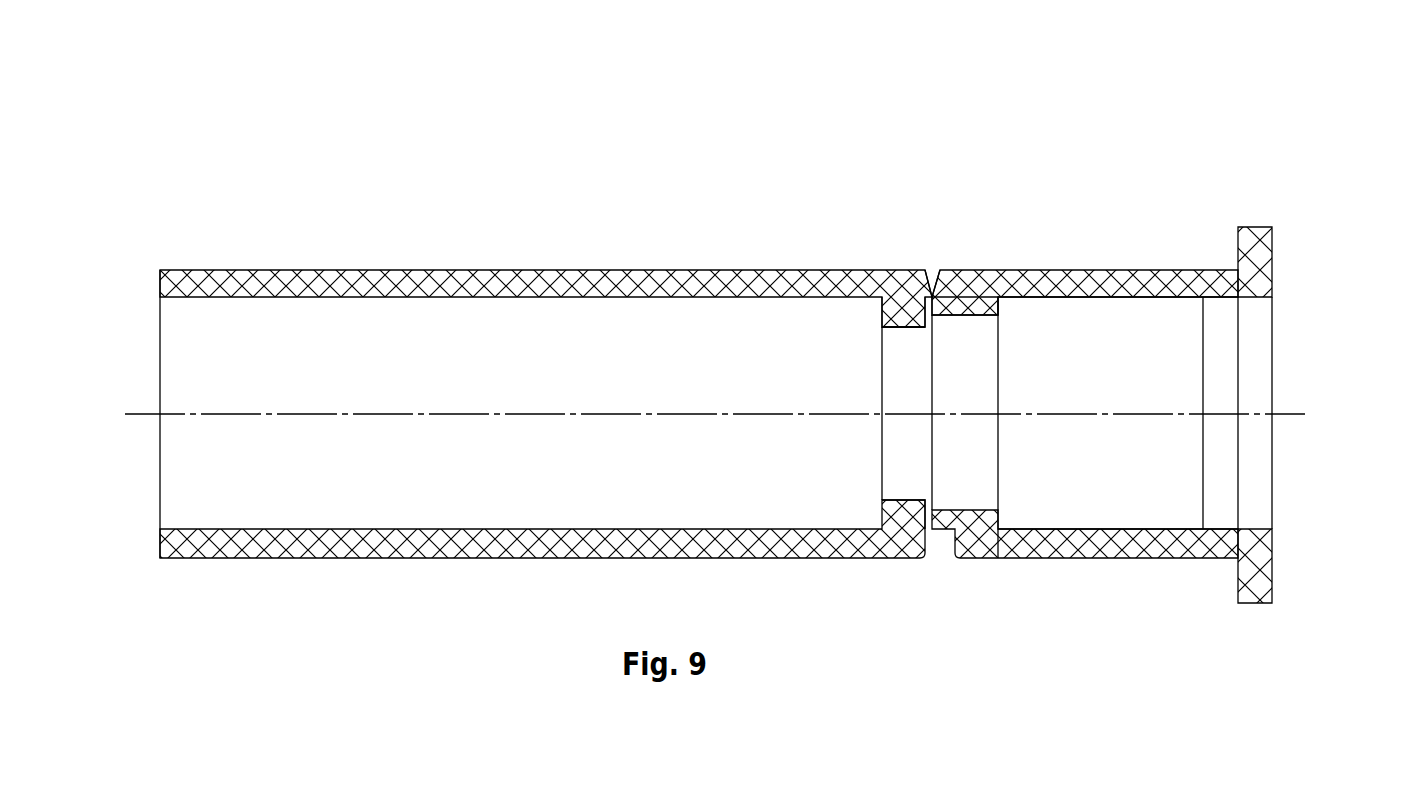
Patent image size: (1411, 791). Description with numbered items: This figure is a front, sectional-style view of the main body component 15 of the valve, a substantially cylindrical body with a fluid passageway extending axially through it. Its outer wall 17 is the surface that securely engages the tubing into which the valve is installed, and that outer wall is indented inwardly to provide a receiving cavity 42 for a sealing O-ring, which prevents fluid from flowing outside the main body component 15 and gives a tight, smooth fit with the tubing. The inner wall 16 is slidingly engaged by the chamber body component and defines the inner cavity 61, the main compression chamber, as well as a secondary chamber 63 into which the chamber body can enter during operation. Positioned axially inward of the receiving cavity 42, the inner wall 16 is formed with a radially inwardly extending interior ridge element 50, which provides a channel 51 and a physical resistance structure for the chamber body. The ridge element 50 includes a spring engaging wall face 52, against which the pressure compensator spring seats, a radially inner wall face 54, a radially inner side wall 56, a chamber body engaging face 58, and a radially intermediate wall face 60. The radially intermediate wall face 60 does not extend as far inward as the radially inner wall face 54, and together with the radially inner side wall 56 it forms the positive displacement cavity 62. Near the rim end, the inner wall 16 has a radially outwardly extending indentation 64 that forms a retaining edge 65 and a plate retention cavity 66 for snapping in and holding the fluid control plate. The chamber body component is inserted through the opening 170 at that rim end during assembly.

The main body component 15 is at (500, 115).
The inner wall 16 is at (600, 528).
The outer wall 17 is at (395, 270).
The receiving cavity 42 is at (934, 296).
The interior ridge element 50 is at (900, 362).
The channel 51 is at (903, 457).
The spring engaging wall face 52 is at (878, 313).
The radially inner wall face 54 is at (897, 327).
The radially inner side wall 56 is at (940, 325).
The chamber body engaging face 58 is at (990, 310).
The radially intermediate wall face 60 is at (978, 317).
The inner cavity 61 is at (382, 468).
The positive displacement cavity 62 is at (965, 477).
The secondary chamber 63 is at (1105, 337).
The indentation 64 is at (1225, 303).
The retaining edge 65 is at (1250, 292).
The plate retention cavity 66 is at (1225, 500).
The opening 170 is at (1253, 348).